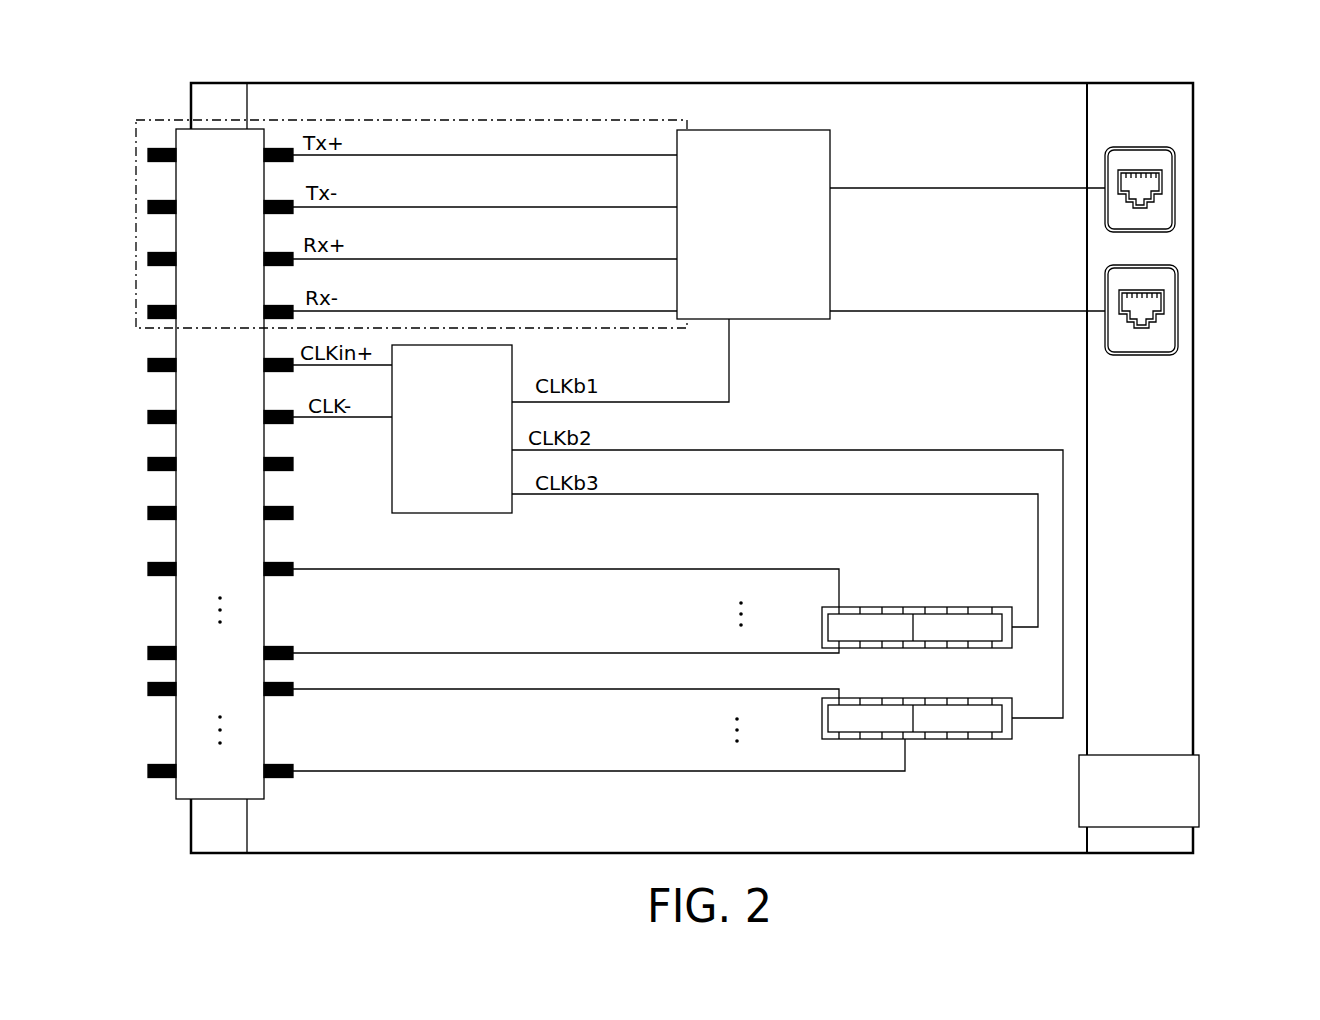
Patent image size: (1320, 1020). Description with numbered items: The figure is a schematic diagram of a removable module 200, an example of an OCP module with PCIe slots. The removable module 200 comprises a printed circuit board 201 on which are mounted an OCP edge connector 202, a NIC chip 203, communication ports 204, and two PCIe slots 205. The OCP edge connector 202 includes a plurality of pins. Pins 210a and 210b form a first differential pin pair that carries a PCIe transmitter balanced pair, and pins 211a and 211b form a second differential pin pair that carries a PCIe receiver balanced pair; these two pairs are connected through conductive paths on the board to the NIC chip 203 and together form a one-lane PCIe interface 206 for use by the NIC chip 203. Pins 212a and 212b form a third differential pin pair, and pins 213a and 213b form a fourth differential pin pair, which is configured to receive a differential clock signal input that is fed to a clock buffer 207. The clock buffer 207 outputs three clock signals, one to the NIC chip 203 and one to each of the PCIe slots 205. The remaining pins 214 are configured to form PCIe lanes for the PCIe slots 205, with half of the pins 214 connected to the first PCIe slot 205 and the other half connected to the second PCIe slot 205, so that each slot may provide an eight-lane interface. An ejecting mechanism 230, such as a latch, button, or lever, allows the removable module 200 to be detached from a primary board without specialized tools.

The removable module 200 is at (975, 42).
The printed circuit board 201 is at (782, 82).
The OCP edge connector 202 is at (176, 797).
The NIC chip 203 is at (753, 224).
The communication ports 204 is at (1158, 147).
The PCIe slots 205 is at (927, 607).
The PCIe interface 206 is at (412, 120).
The clock buffer 207 is at (452, 429).
The pin 210a is at (220, 155).
The pin 210b is at (220, 207).
The pin 211a is at (220, 259).
The pin 211b is at (220, 312).
The pin 212a is at (220, 365).
The pin 212b is at (220, 417).
The pin 213a is at (220, 464).
The pin 213b is at (220, 513).
The pins 214 is at (220, 670).
The ejecting mechanism 230 is at (1139, 791).